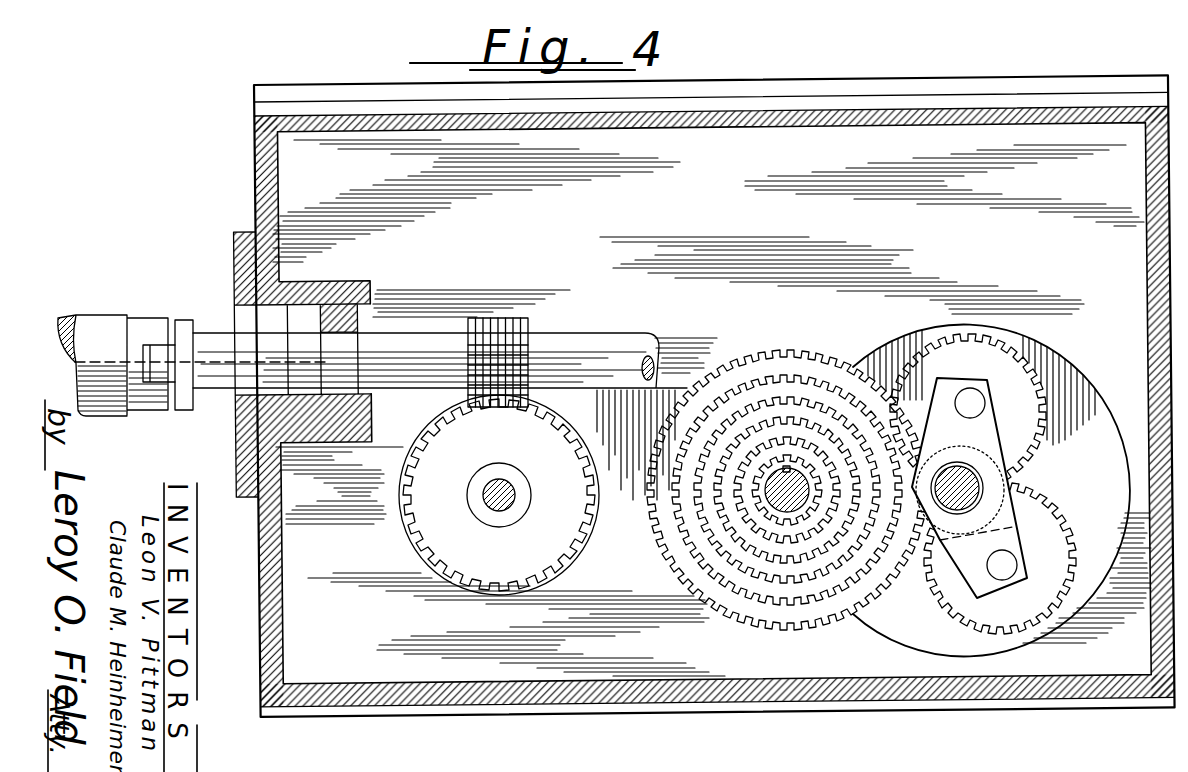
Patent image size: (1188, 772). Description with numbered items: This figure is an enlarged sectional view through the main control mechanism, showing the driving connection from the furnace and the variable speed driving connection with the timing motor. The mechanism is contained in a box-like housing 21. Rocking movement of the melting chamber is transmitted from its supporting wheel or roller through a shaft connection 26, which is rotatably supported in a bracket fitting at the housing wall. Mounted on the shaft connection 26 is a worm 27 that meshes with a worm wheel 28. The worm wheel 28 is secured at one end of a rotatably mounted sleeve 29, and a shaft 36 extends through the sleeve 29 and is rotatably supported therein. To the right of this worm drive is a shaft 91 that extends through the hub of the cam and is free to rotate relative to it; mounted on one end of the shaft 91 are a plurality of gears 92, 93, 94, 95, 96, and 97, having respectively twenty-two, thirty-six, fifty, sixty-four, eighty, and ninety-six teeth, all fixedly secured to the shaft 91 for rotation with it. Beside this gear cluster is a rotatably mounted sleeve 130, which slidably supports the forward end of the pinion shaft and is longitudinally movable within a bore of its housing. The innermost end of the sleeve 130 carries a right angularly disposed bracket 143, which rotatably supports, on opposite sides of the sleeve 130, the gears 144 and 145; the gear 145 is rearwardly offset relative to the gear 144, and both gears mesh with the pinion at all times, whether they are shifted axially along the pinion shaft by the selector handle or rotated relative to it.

The housing 21 is at (617, 693).
The shaft connection 26 is at (207, 336).
The worm 27 is at (505, 336).
The worm wheel 28 is at (470, 495).
The sleeve 29 is at (495, 470).
The shaft 36 is at (508, 490).
The shaft 91 is at (783, 475).
The gear 92 is at (787, 494).
The gear 93 is at (787, 489).
The gear 94 is at (787, 490).
The gear 95 is at (787, 490).
The gear 96 is at (787, 490).
The gear 97 is at (787, 490).
The sleeve 130 is at (955, 466).
The bracket 143 is at (995, 487).
The gear 144 is at (937, 367).
The gear 145 is at (1045, 533).